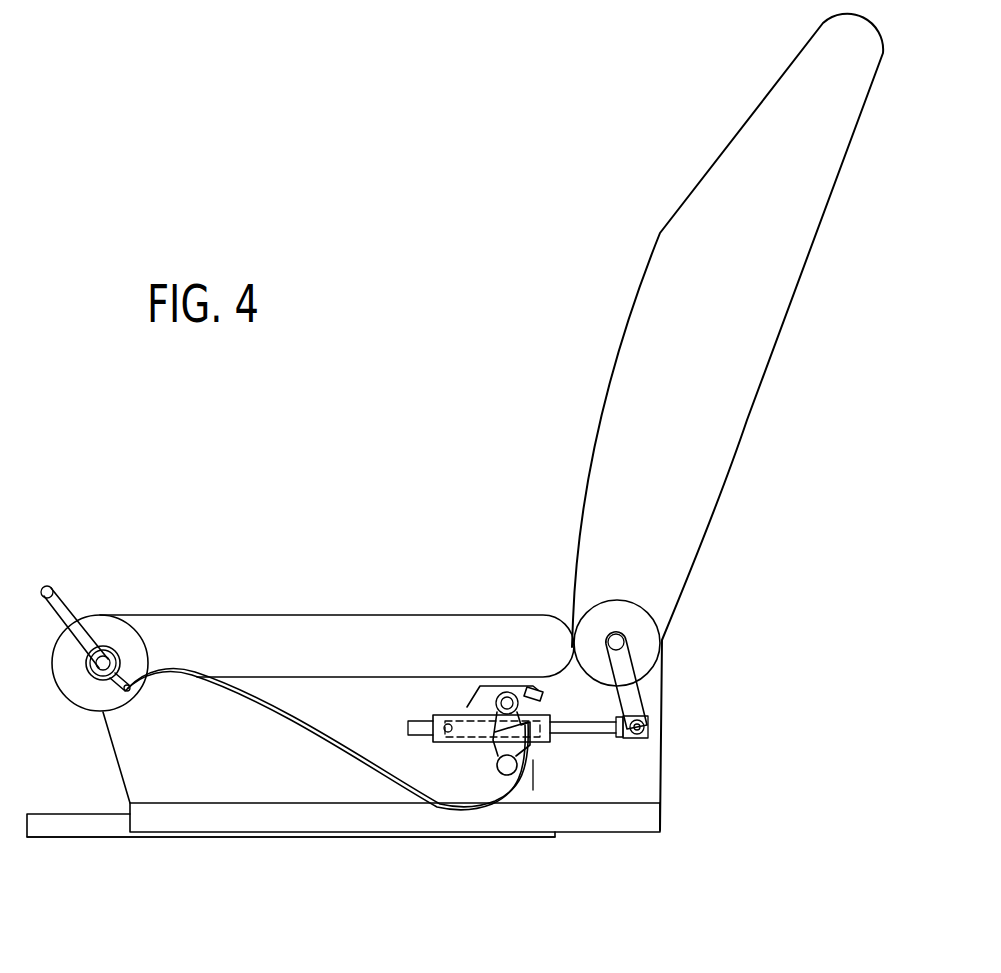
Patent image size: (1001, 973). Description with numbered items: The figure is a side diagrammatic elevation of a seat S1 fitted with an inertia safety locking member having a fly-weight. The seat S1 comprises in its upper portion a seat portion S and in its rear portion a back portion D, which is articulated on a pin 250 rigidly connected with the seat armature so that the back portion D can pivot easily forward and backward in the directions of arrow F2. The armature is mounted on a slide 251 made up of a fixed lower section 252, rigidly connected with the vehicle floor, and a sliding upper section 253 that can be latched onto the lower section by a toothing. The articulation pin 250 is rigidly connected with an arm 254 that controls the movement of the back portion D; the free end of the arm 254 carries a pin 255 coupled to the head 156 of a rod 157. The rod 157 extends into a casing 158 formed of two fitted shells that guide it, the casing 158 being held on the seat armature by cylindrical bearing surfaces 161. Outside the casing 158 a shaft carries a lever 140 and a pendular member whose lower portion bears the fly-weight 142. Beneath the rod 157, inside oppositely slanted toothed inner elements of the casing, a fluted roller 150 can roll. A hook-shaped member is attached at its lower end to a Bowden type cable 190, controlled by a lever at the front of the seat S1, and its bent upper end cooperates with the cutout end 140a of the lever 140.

The back portion D is at (755, 287).
The arrow of pivoting directions F2 is at (852, 227).
The seat portion S is at (270, 640).
The seat S1 is at (231, 767).
The pin 250 is at (623, 642).
The arm 254 is at (632, 697).
The pin 255 is at (644, 727).
The head 156 is at (632, 742).
The rod 157 is at (597, 733).
The cylindrical bearing surfaces 161 is at (442, 740).
The casing 158 is at (485, 700).
The cutout end 140a is at (527, 687).
The lever 140 is at (538, 738).
The fly-weight 142 is at (505, 778).
The fluted roller 150 is at (543, 790).
The cable 190 is at (345, 770).
The upper section 253 is at (186, 818).
The lower section 252 is at (108, 823).
The slide 251 is at (73, 842).